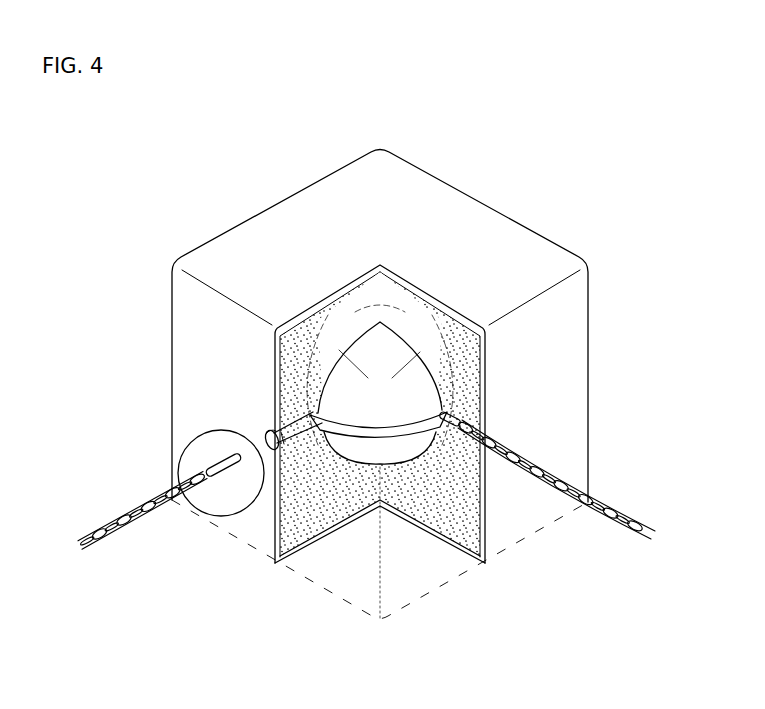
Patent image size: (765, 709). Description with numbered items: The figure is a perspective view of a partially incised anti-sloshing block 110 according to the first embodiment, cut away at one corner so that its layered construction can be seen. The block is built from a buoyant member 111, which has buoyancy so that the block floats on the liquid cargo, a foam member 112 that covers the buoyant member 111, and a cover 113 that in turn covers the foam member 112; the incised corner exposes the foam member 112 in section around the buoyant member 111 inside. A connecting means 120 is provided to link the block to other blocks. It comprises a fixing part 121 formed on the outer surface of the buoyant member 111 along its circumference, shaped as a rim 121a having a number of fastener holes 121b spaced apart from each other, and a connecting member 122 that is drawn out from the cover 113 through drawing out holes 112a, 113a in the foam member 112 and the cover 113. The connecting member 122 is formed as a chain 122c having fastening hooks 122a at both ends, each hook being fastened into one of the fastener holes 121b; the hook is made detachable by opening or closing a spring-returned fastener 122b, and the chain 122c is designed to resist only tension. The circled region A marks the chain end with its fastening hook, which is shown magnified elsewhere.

The anti-sloshing block 110 is at (466, 186).
The buoyant member 111 is at (397, 350).
The foam member 112 is at (470, 357).
The cover 113 is at (580, 363).
The drawing out hole 112a is at (282, 437).
The drawing out hole 113a is at (270, 436).
The connecting means 120 is at (90, 565).
The fixing part 121 is at (135, 556).
The rim 121a is at (365, 430).
The fastener hole 121b is at (278, 442).
The connecting member 122 is at (366, 509).
The fastening hook 122a is at (447, 422).
The fastener 122b is at (263, 443).
The chain 122c is at (568, 484).
The A part A is at (177, 473).